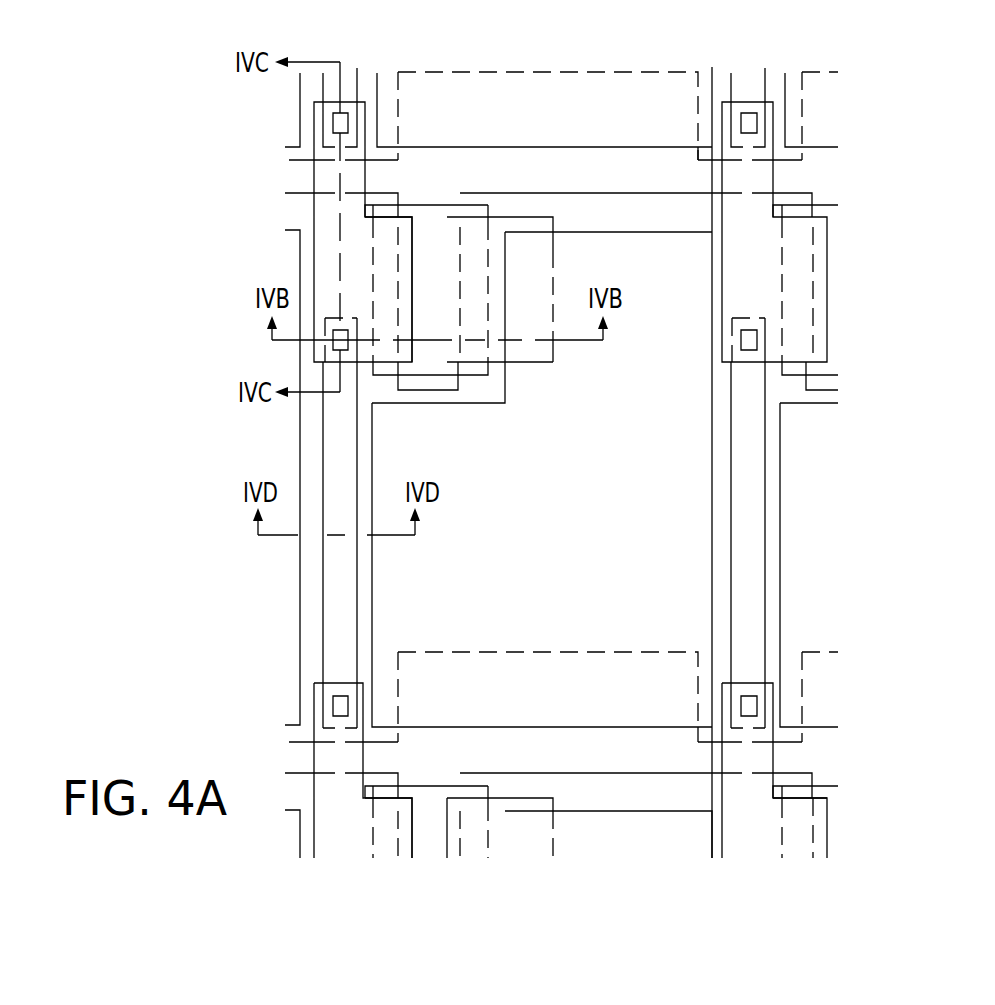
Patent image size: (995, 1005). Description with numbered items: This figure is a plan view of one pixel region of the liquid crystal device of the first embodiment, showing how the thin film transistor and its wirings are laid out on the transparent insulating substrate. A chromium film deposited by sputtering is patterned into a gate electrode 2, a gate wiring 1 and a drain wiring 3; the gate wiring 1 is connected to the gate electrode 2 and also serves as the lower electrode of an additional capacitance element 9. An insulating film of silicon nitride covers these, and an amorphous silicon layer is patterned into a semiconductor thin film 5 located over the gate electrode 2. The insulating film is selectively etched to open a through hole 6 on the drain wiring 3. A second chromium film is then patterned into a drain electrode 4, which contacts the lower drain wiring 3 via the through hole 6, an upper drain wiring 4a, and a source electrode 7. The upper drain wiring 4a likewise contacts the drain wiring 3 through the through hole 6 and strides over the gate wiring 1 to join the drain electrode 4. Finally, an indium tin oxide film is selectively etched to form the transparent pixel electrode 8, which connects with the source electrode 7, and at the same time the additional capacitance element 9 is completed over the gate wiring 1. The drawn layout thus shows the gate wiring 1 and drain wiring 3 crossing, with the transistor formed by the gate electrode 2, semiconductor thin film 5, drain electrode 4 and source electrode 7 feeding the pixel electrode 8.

The gate wiring 1 is at (590, 755).
The gate electrode 2 is at (437, 393).
The drain wiring 3 is at (340, 565).
The drain electrode 4 is at (385, 355).
The upper drain wiring 4a is at (360, 177).
The semiconductor thin film 5 is at (475, 368).
The through hole 6 is at (337, 708).
The source electrode 7 is at (519, 217).
The transparent pixel electrode 8 is at (695, 482).
The additional capacitance element 9 is at (444, 108).